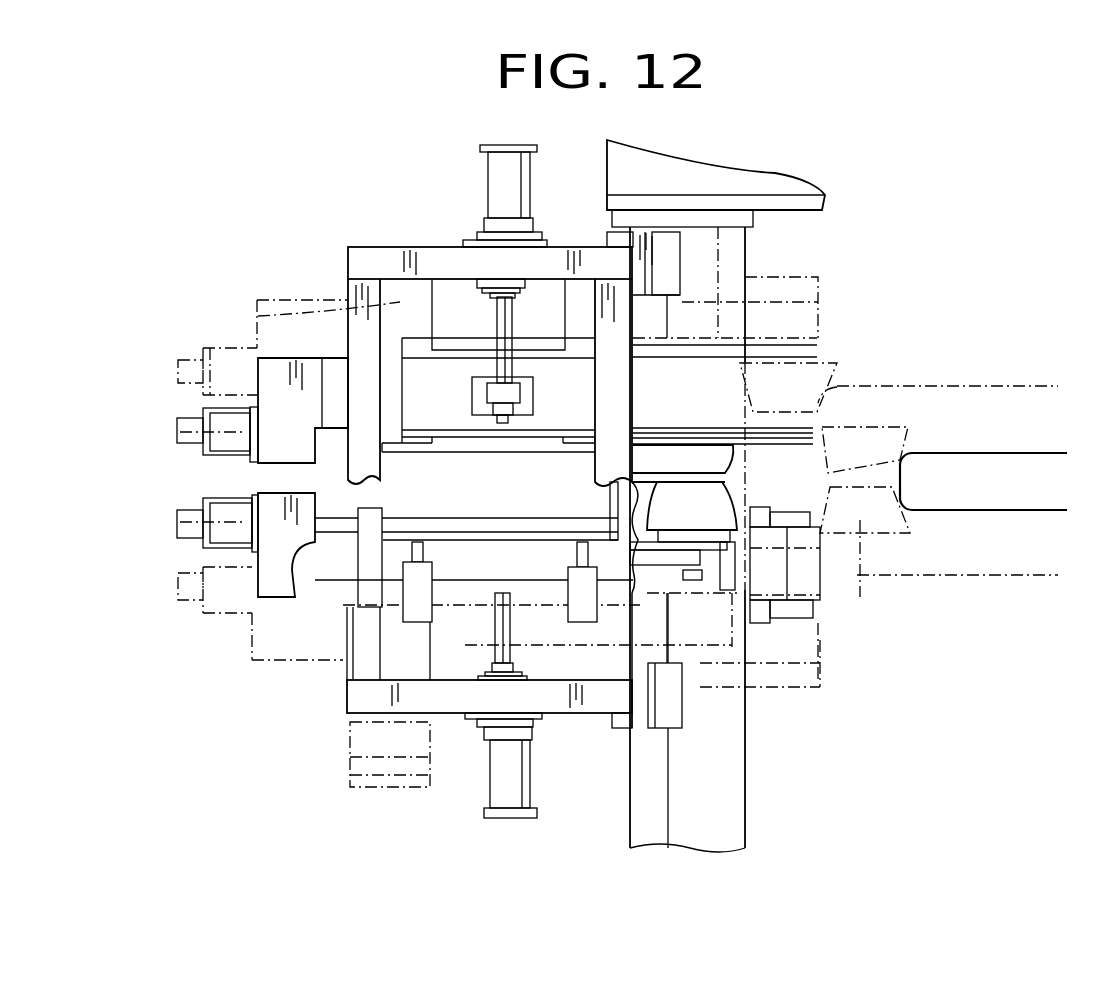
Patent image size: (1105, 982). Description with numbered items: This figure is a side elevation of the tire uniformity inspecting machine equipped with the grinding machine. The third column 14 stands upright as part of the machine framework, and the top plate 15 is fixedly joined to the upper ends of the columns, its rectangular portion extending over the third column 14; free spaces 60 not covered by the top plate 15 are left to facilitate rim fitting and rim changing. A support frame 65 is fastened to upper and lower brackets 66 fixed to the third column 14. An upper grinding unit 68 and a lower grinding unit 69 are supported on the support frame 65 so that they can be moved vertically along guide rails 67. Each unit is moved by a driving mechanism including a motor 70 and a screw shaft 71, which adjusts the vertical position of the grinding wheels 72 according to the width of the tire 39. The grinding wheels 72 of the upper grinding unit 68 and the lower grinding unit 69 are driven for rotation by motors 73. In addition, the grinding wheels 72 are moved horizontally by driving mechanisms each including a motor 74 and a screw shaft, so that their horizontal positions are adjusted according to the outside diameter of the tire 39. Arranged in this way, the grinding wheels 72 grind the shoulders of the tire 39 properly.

The third column 14 is at (723, 827).
The top plate 15 is at (785, 180).
The tire 39 is at (952, 453).
The free spaces 60 is at (670, 258).
The support frame 65 is at (348, 263).
The brackets 66 is at (673, 720).
The guide rails 67 is at (567, 570).
The upper grinding unit 68 is at (455, 397).
The lower grinding unit 69 is at (400, 500).
The motor 70 is at (488, 184).
The screw shaft 71 is at (512, 318).
The grinding wheels 72 is at (693, 460).
The motors 73 is at (255, 310).
The motor 74 is at (233, 503).